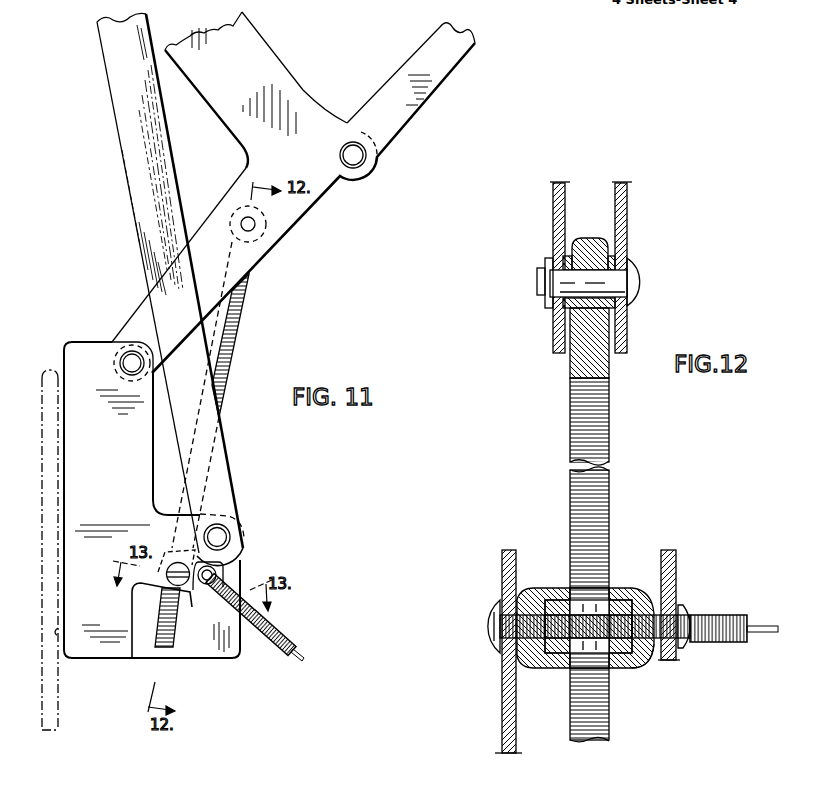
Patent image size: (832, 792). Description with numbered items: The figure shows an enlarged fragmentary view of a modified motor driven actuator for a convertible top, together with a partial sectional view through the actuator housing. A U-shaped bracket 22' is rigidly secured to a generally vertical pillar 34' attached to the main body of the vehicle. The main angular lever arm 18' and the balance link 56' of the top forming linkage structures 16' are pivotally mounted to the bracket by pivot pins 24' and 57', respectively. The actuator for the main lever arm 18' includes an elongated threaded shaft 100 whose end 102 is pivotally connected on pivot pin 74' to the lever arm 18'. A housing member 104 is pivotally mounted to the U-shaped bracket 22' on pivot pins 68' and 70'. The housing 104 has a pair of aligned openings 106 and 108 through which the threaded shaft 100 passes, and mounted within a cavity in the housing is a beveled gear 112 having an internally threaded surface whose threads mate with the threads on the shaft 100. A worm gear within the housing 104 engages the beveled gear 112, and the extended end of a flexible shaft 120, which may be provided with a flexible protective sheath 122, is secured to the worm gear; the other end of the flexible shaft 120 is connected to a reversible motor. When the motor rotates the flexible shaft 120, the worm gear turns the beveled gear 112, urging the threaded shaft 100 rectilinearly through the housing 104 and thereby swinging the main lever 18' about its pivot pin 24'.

In FIG. 11, the top forming linkage structures 16' is at (148, 289).
In FIG. 11, the balance link 56' is at (109, 189).
In FIG. 11, the main angular lever arm 18' is at (293, 192).
In FIG. 11, the U-shaped bracket 22' is at (135, 500).
In FIG. 12, the U-shaped bracket 22' is at (597, 467).
In FIG. 11, the pivot pin 24' is at (128, 338).
In FIG. 11, the pillar 34' is at (36, 543).
In FIG. 11, the pivot pin 74' is at (276, 244).
In FIG. 12, the pivot pin 74' is at (606, 273).
In FIG. 11, the end of threaded shaft 102 is at (256, 282).
In FIG. 12, the end of threaded shaft 102 is at (592, 239).
In FIG. 11, the pivot pin 57' is at (247, 532).
In FIG. 11, the threaded shaft 100 is at (176, 637).
In FIG. 12, the threaded shaft 100 is at (581, 440).
In FIG. 11, the housing member 104 is at (194, 602).
In FIG. 12, the housing member 104 is at (545, 674).
In FIG. 12, the opening 106 is at (615, 597).
In FIG. 12, the opening 108 is at (610, 670).
In FIG. 12, the beveled gear 112 is at (632, 668).
In FIG. 12, the pivot pin 70' is at (470, 615).
In FIG. 12, the pivot pin 68' is at (628, 615).
In FIG. 11, the flexible protective sheath 122 is at (290, 638).
In FIG. 12, the flexible protective sheath 122 is at (717, 647).
In FIG. 11, the flexible shaft 120 is at (298, 662).
In FIG. 12, the flexible shaft 120 is at (766, 641).